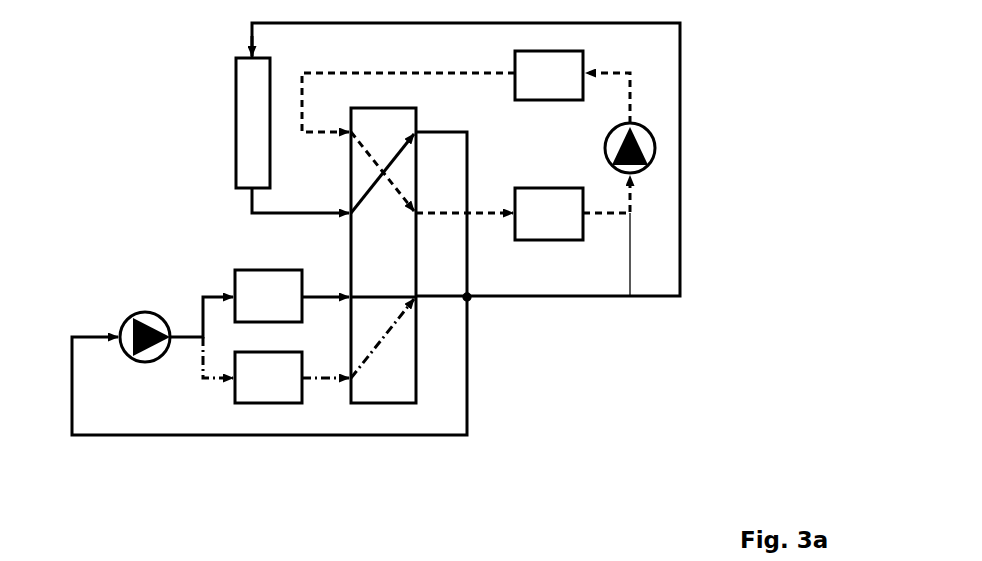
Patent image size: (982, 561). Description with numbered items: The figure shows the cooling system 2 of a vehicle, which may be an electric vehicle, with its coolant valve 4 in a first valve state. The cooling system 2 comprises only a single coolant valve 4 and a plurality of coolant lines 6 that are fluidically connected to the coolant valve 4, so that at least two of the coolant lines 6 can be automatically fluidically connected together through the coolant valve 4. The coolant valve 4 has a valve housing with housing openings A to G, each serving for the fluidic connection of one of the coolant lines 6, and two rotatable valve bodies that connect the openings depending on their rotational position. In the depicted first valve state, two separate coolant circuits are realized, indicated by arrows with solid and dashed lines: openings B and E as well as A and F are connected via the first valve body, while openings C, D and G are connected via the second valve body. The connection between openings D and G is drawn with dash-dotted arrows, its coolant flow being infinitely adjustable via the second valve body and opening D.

The cooling system 2 is at (67, 492).
The coolant valve 4 is at (393, 377).
The coolant lines 6 is at (238, 435).